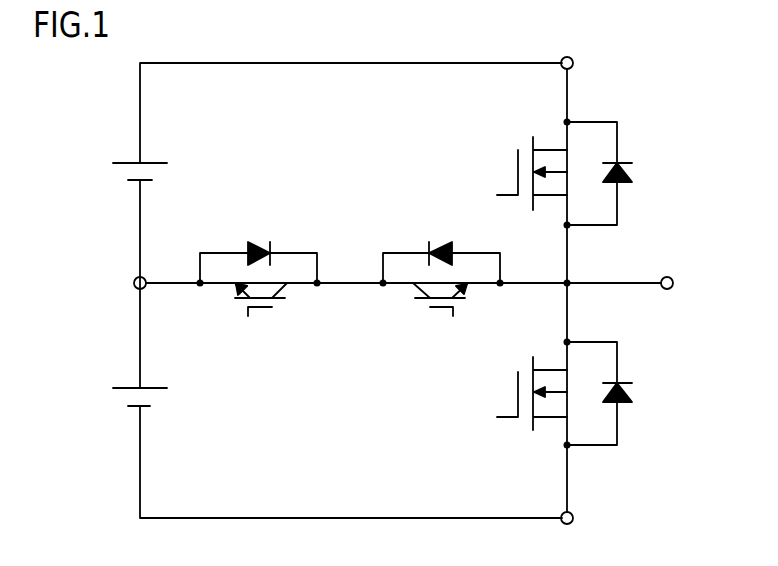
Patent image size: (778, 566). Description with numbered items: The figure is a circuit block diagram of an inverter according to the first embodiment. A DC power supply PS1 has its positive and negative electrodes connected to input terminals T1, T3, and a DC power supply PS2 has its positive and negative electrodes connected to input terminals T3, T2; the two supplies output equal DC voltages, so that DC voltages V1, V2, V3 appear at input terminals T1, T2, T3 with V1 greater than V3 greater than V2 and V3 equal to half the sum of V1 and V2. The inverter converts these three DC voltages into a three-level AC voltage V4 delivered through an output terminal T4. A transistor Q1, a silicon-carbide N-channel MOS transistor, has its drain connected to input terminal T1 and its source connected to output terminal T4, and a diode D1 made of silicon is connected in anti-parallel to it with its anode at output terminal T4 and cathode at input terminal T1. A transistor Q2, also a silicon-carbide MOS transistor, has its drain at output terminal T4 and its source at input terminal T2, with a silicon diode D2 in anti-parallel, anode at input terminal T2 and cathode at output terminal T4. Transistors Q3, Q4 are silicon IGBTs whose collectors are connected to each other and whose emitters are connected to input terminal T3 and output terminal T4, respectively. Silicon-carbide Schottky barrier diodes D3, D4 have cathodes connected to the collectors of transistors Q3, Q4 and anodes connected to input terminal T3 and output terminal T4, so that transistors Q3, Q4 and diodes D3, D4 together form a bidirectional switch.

The DC power supply PS1 is at (128, 162).
The DC power supply PS2 is at (128, 386).
The transistor Q1 is at (517, 172).
The transistor Q2 is at (517, 392).
The transistor Q3 is at (262, 312).
The transistor Q4 is at (447, 312).
The diode D1 is at (633, 167).
The diode D2 is at (633, 387).
The diode D3 is at (263, 240).
The diode D4 is at (436, 240).
The input terminal T1 is at (574, 63).
The input terminal T2 is at (574, 518).
The input terminal T3 is at (146, 289).
The output terminal T4 is at (667, 289).
The DC voltage V1 is at (566, 43).
The DC voltage V2 is at (566, 543).
The DC voltage V3 is at (111, 284).
The AC voltage V4 is at (696, 285).